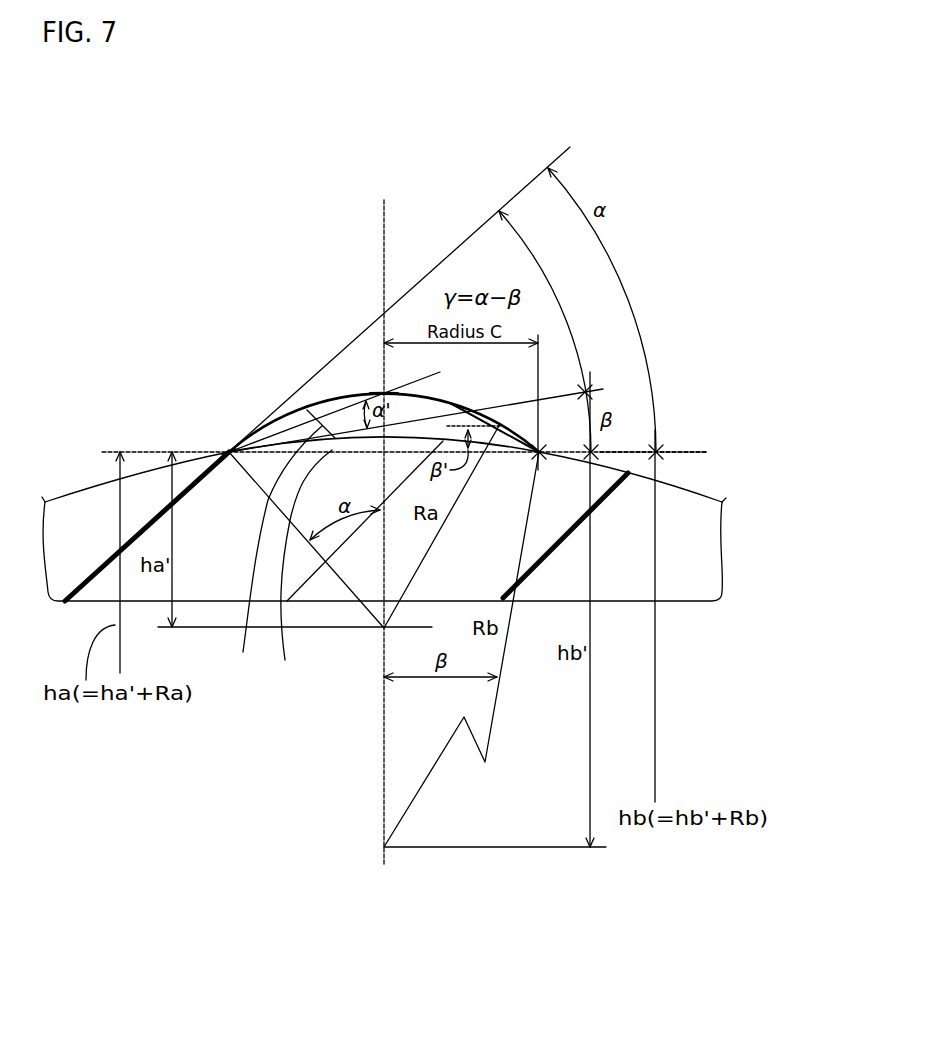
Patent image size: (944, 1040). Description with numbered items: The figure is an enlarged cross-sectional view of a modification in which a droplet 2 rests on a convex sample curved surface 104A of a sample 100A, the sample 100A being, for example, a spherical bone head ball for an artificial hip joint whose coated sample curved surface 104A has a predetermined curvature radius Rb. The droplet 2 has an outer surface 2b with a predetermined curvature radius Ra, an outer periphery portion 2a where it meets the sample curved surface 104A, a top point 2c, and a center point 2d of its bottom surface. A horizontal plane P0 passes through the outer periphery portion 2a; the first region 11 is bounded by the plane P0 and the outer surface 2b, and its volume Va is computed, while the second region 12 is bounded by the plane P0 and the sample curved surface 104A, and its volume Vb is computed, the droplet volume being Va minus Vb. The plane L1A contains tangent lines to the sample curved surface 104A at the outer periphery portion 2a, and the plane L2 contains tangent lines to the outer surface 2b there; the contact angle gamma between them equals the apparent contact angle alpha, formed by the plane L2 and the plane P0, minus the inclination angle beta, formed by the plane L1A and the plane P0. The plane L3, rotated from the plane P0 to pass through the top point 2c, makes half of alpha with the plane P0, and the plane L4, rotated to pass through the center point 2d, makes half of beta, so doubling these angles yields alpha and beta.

The droplet 2 is at (372, 416).
The outer periphery portion 2a is at (228, 450).
The outer surface 2b is at (337, 397).
The top point 2c is at (387, 391).
The center point of the bottom surface 2d is at (380, 440).
The first region 11 is at (420, 418).
The second region 12 is at (400, 447).
The sample 100A is at (710, 588).
The sample curved surface 104A is at (679, 487).
The plane L1A is at (489, 406).
The plane L2 is at (422, 273).
The plane L3 is at (421, 378).
The plane L4 is at (500, 428).
The plane P0 is at (684, 451).
The volume Va is at (278, 556).
The volume Vb is at (302, 568).